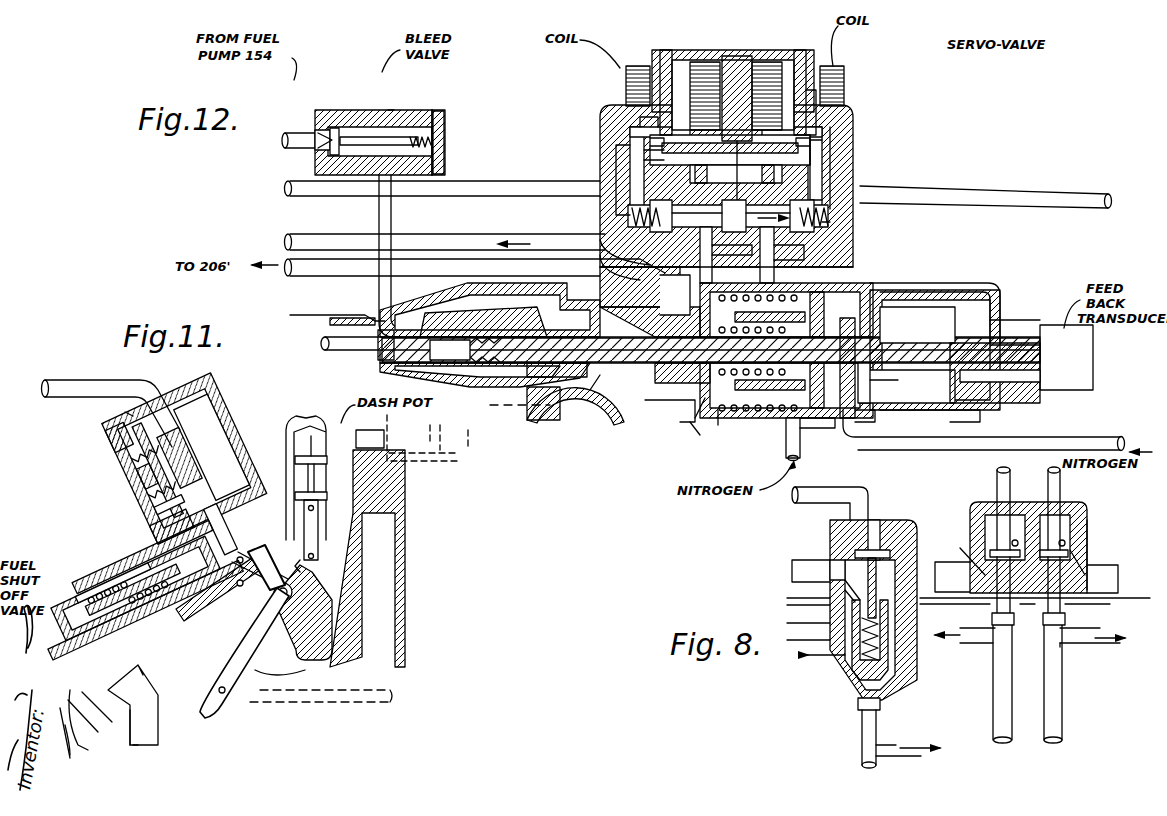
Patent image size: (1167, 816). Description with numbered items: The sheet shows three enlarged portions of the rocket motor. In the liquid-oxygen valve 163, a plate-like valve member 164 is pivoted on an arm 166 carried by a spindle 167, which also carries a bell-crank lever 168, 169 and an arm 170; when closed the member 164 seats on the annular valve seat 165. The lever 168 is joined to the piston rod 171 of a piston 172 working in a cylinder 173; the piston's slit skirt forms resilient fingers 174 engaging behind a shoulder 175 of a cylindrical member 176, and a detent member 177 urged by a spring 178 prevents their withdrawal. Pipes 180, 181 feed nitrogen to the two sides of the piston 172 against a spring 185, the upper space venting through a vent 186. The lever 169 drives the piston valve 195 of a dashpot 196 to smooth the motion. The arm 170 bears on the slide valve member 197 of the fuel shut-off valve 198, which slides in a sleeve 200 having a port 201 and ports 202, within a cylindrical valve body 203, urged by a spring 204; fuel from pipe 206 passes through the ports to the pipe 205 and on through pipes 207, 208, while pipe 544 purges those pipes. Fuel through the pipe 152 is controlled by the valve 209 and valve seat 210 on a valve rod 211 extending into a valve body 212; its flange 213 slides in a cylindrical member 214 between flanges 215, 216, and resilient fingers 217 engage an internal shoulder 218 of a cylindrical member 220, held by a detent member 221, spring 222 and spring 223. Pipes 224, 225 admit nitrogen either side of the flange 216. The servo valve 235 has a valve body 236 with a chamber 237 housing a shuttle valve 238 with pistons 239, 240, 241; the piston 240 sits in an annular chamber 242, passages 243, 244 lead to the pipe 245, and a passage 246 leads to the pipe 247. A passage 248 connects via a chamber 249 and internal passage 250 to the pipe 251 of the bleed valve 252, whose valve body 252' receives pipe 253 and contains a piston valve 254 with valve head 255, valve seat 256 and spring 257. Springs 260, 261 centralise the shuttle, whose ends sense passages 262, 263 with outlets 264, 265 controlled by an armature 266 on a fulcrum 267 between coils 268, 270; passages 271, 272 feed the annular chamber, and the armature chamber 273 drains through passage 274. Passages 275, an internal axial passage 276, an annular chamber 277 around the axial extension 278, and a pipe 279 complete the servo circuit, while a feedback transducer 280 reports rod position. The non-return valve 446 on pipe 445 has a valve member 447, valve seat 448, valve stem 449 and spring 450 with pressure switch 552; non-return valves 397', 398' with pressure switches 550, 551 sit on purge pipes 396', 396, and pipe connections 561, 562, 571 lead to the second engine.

In FIG. 12, the pipe 152 is at (297, 317).
In FIG. 11, the valve 163 is at (100, 448).
In FIG. 11, the valve member 164 is at (223, 716).
In FIG. 11, the annular valve seat 165 is at (263, 685).
In FIG. 11, the arm 166 is at (293, 622).
In FIG. 11, the spindle 167 is at (298, 595).
In FIG. 11, the bell-crank lever 168 is at (205, 631).
In FIG. 11, the bell-crank lever 169 is at (325, 580).
In FIG. 11, the arm 170 is at (273, 564).
In FIG. 11, the piston rod 171 is at (207, 513).
In FIG. 11, the piston 172 is at (225, 466).
In FIG. 11, the cylinder 173 is at (142, 499).
In FIG. 11, the resilient fingers 174 is at (240, 452).
In FIG. 11, the shoulder 175 is at (135, 480).
In FIG. 11, the cylindrical member 176 is at (137, 465).
In FIG. 11, the detent member 177 is at (210, 426).
In FIG. 11, the spring 178 is at (122, 423).
In FIG. 11, the pipe 180 is at (116, 561).
In FIG. 11, the pipe 181 is at (67, 387).
In FIG. 11, the spring 185 is at (135, 484).
In FIG. 11, the vent 186 is at (125, 410).
In FIG. 11, the piston valve 195 is at (298, 452).
In FIG. 11, the dashpot 196 is at (383, 490).
In FIG. 11, the slide valve member 197 is at (175, 658).
In FIG. 11, the fuel shut-off valve 198 is at (62, 616).
In FIG. 11, the sleeve 200 is at (96, 702).
In FIG. 11, the port 201 is at (92, 720).
In FIG. 11, the ports 202 is at (138, 708).
In FIG. 11, the cylindrical valve body 203 is at (108, 590).
In FIG. 11, the spring 204 is at (118, 590).
In FIG. 11, the pipe 205 is at (138, 737).
In FIG. 11, the pipe 206 is at (70, 742).
In FIG. 11, the pipe 207 is at (373, 692).
In FIG. 11, the pipe 208 is at (136, 745).
In FIG. 12, the valve 209 is at (445, 310).
In FIG. 12, the valve seat 210 is at (568, 385).
In FIG. 12, the valve rod 211 is at (560, 338).
In FIG. 12, the valve body 212 is at (792, 430).
In FIG. 12, the flange 213 is at (898, 307).
In FIG. 12, the cylindrical member 214 is at (903, 409).
In FIG. 12, the flange 215 is at (883, 380).
In FIG. 12, the flange 216 is at (858, 418).
In FIG. 12, the resilient fingers 217 is at (848, 297).
In FIG. 12, the internal shoulder 218 is at (793, 287).
In FIG. 12, the cylindrical member 220 is at (740, 416).
In FIG. 12, the detent member 221 is at (725, 415).
In FIG. 12, the spring 222 is at (700, 390).
In FIG. 12, the spring 223 is at (660, 272).
In FIG. 12, the pipe 224 is at (795, 435).
In FIG. 12, the pipe 225 is at (988, 448).
In FIG. 12, the servo valve 235 is at (868, 70).
In FIG. 12, the valve body 236 is at (845, 138).
In FIG. 12, the chamber 237 is at (730, 147).
In FIG. 12, the shuttle valve 238 is at (960, 200).
In FIG. 12, the piston 239 is at (635, 204).
In FIG. 12, the piston 240 is at (853, 202).
In FIG. 12, the piston 241 is at (854, 218).
In FIG. 12, the annular chamber 242 is at (818, 212).
In FIG. 12, the passage 243 is at (625, 250).
In FIG. 12, the passage 244 is at (838, 241).
In FIG. 12, the pipe 245 is at (406, 238).
In FIG. 12, the passage 246 is at (619, 313).
In FIG. 12, the pipe 247 is at (335, 276).
In FIG. 12, the passage 248 is at (593, 286).
In FIG. 12, the chamber 249 is at (600, 392).
In FIG. 12, the internal passage 250 is at (524, 331).
In FIG. 12, the pipe 251 is at (379, 216).
In FIG. 12, the bleed valve 252 is at (413, 125).
In FIG. 12, the valve body 252' is at (415, 94).
In FIG. 12, the pipe 253 is at (293, 130).
In FIG. 12, the piston valve 254 is at (328, 154).
In FIG. 12, the valve head 255 is at (311, 142).
In FIG. 12, the valve seat 256 is at (356, 110).
In FIG. 12, the spring 257 is at (439, 146).
In FIG. 12, the spring 260 is at (645, 222).
In FIG. 12, the spring 261 is at (843, 222).
In FIG. 12, the passage 262 is at (640, 120).
In FIG. 12, the passage 263 is at (818, 141).
In FIG. 12, the outlet 264 is at (645, 138).
In FIG. 12, the outlet 265 is at (843, 110).
In FIG. 12, the armature 266 is at (690, 132).
In FIG. 12, the fulcrum 267 is at (750, 152).
In FIG. 12, the coil 268 is at (627, 72).
In FIG. 12, the coil 270 is at (832, 68).
In FIG. 12, the passage 271 is at (794, 92).
In FIG. 12, the passage 272 is at (813, 159).
In FIG. 12, the chamber 273 is at (660, 87).
In FIG. 12, the passage 274 is at (643, 161).
In FIG. 12, the passages 275 is at (718, 438).
In FIG. 12, the internal axial passage 276 is at (912, 347).
In FIG. 12, the annular chamber 277 is at (1008, 330).
In FIG. 12, the axial extension 278 is at (1022, 396).
In FIG. 12, the pipe 279 is at (997, 282).
In FIG. 12, the feedback transducer 280 is at (1083, 390).
In FIG. 8, the pipe 396 is at (1079, 605).
In FIG. 8, the pipe 396' is at (1024, 605).
In FIG. 8, the non-return valve 397' is at (1006, 533).
In FIG. 8, the non-return valve 398' is at (1113, 544).
In FIG. 8, the pipe 445 is at (863, 730).
In FIG. 8, the non-return valve 446 is at (917, 642).
In FIG. 8, the valve member 447 is at (856, 550).
In FIG. 8, the valve seat 448 is at (878, 523).
In FIG. 8, the valve stem 449 is at (875, 580).
In FIG. 8, the spring 450 is at (890, 677).
In FIG. 8, the pressure switch 550 is at (948, 555).
In FIG. 8, the pressure switch 551 is at (1097, 563).
In FIG. 8, the pressure switch 552 is at (792, 567).
In FIG. 8, the pipe connection 561 is at (979, 635).
In FIG. 8, the pipe connection 562 is at (1078, 638).
In FIG. 8, the pipe connection 571 is at (886, 742).
In FIG. 11, the pipe 544 is at (65, 740).